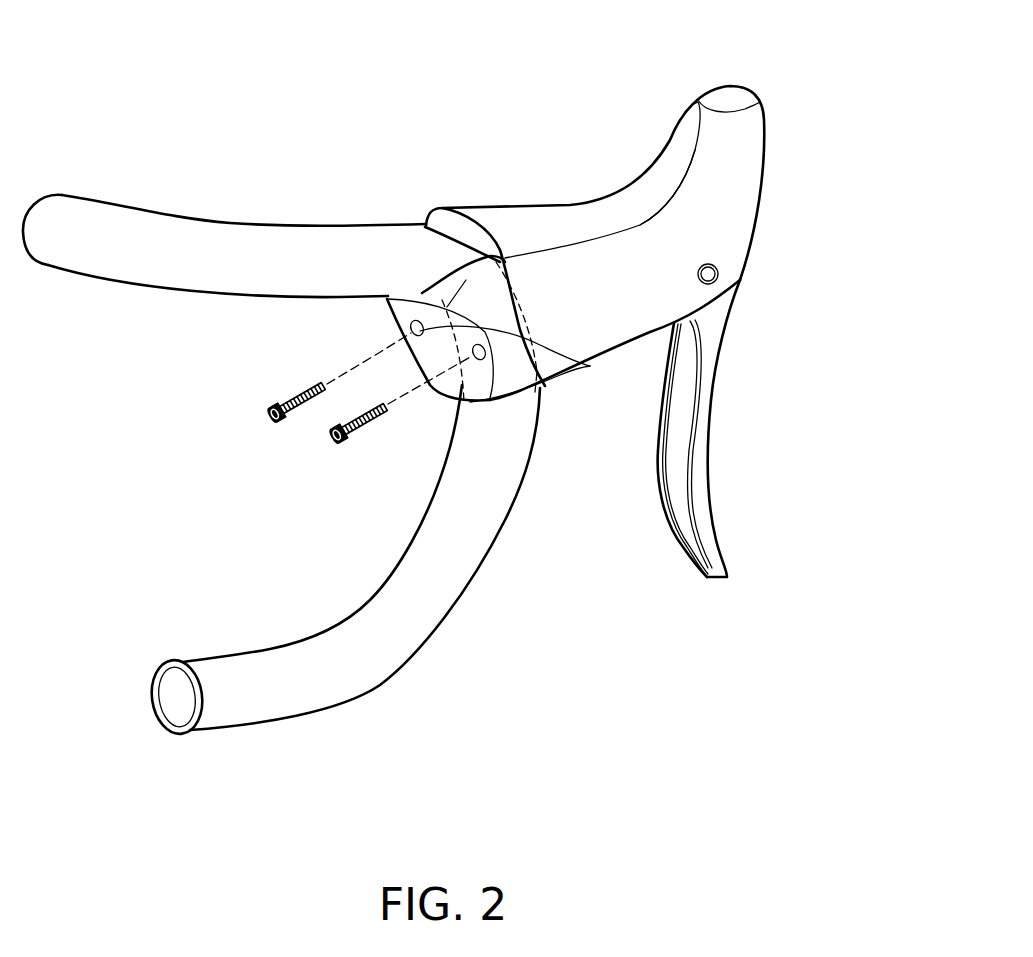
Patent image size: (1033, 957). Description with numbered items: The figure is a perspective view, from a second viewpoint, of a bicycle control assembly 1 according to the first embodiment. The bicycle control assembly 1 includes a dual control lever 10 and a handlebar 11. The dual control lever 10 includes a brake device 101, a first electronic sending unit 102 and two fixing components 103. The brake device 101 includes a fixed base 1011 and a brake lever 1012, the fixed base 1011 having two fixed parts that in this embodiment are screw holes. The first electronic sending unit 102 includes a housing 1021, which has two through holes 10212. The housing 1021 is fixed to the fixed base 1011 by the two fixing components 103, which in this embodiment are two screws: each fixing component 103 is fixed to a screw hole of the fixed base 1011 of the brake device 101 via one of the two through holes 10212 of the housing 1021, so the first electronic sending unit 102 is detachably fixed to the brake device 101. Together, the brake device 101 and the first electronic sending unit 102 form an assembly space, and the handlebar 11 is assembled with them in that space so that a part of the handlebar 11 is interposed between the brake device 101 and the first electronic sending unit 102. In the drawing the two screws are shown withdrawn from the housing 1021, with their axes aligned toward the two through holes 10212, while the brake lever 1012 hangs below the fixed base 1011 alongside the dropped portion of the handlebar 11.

The bicycle control assembly 1 is at (169, 36).
The dual control lever 10 is at (317, 129).
The brake device 101 is at (568, 205).
The fixed base 1011 is at (728, 208).
The brake lever 1012 is at (713, 325).
The first electronic sending unit 102 is at (466, 270).
The housing 1021 is at (455, 377).
The through holes 10212 is at (537, 390).
The fixing components 103 is at (356, 410).
The handlebar 11 is at (463, 545).